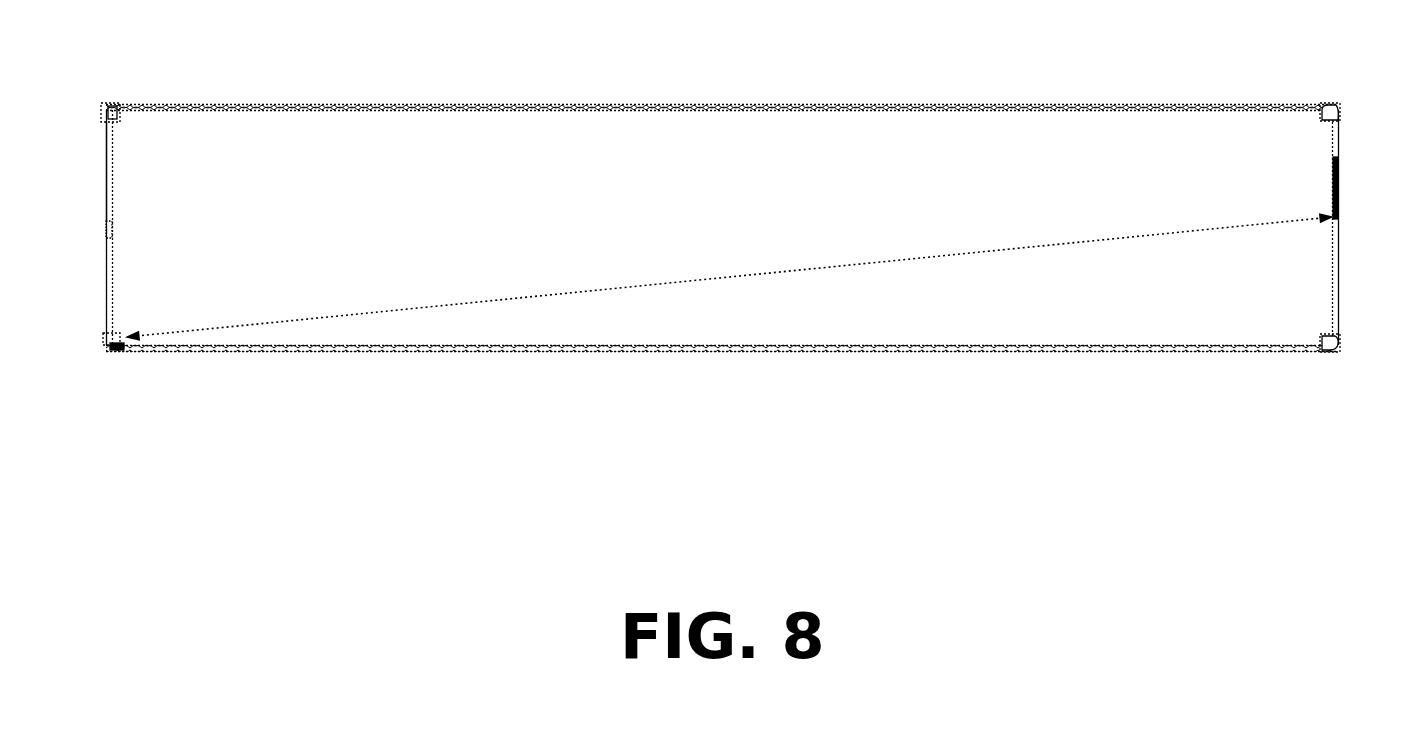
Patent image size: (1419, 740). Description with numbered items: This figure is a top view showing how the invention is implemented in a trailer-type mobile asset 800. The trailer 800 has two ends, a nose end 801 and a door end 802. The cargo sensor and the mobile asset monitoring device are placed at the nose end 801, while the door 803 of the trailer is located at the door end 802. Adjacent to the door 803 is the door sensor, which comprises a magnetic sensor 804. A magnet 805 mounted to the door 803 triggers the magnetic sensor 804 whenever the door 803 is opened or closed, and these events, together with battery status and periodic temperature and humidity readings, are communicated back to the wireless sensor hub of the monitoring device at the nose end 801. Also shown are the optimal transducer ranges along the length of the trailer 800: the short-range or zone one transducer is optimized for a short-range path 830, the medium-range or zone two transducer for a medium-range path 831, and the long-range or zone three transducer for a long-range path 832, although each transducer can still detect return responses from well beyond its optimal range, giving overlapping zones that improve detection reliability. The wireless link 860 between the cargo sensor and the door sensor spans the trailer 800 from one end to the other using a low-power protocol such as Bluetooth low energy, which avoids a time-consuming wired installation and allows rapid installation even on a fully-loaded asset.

The trailer-type mobile asset 800 is at (440, 352).
The nose end 801 is at (1340, 217).
The door end 802 is at (106, 206).
The door 803 is at (106, 252).
The magnetic sensor 804 is at (123, 349).
The magnet 805 is at (106, 338).
The short-range path 830 is at (1280, 97).
The medium-range path 831 is at (1008, 360).
The long-range path 832 is at (633, 97).
The wireless link 860 is at (729, 277).